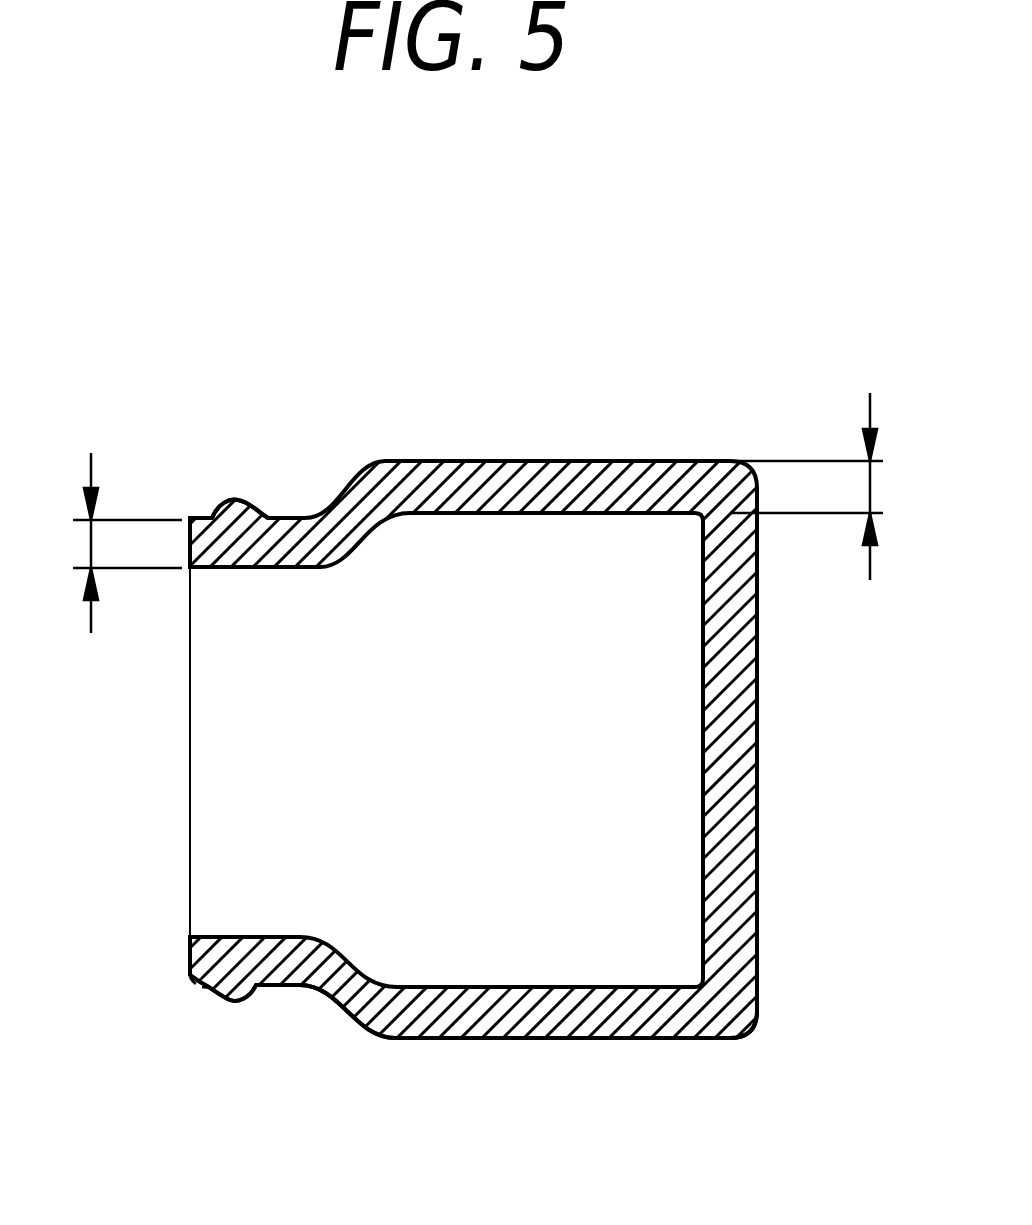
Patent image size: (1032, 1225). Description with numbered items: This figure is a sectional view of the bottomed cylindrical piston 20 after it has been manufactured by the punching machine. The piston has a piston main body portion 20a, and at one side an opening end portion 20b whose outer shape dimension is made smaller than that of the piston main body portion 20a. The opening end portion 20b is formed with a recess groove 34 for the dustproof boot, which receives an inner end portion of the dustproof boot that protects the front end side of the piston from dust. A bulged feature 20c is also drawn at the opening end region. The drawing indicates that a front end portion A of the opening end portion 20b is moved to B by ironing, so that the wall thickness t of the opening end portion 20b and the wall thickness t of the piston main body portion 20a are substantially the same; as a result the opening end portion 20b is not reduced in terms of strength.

The bottomed cylindrical piston 20 is at (692, 410).
The piston main body portion 20a is at (628, 1040).
The opening end portion 20b is at (190, 952).
The bulged portion at open end 20c is at (235, 1002).
The recess groove for the dustproof boot 34 is at (286, 996).
The front end portion A is at (197, 520).
The position after ironing B is at (228, 498).
The wall thickness t is at (477, 513).